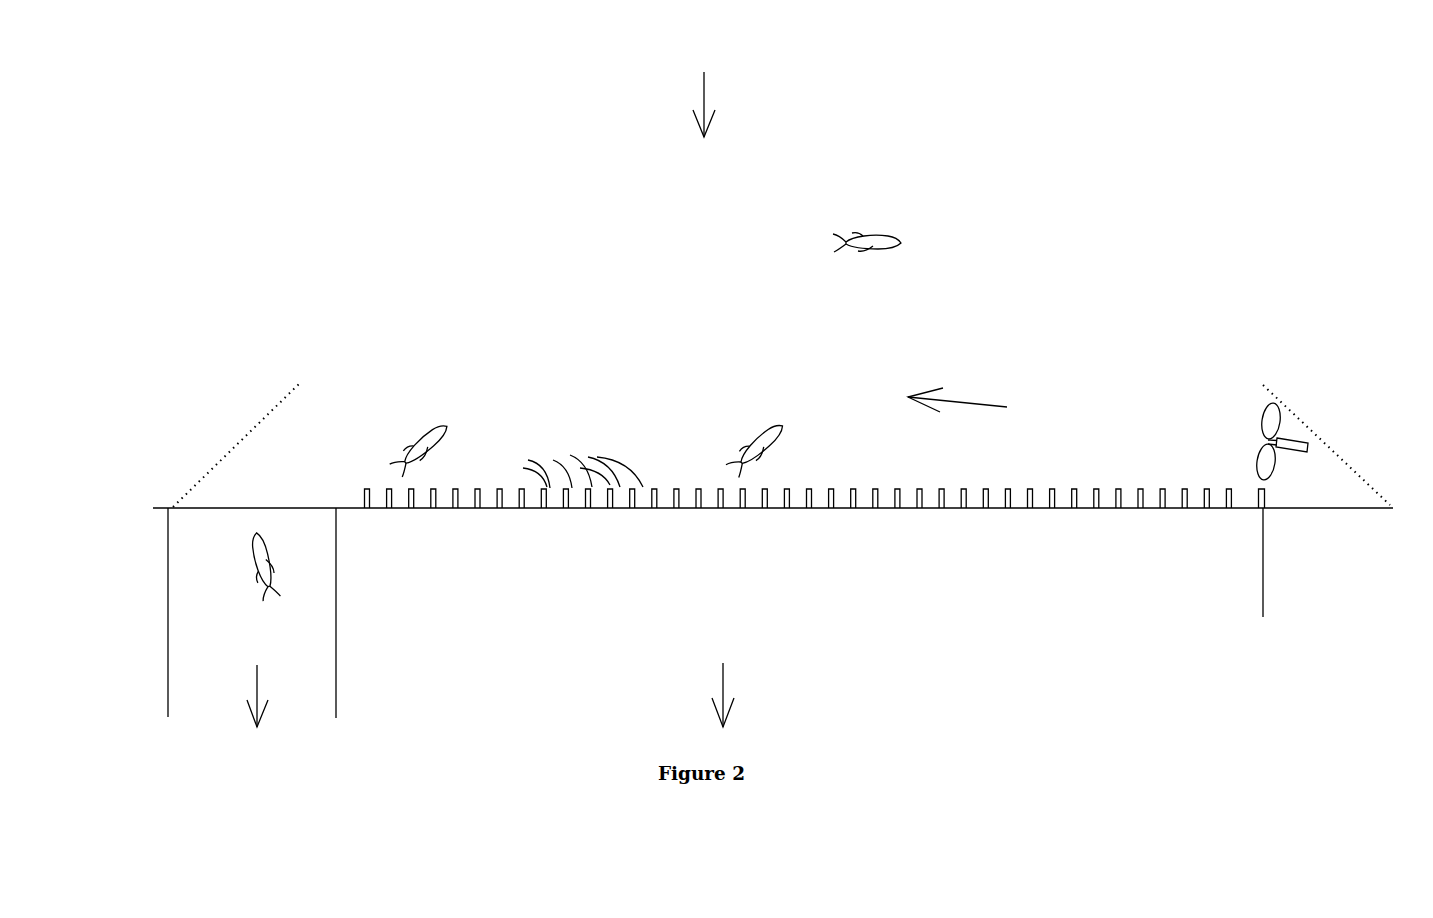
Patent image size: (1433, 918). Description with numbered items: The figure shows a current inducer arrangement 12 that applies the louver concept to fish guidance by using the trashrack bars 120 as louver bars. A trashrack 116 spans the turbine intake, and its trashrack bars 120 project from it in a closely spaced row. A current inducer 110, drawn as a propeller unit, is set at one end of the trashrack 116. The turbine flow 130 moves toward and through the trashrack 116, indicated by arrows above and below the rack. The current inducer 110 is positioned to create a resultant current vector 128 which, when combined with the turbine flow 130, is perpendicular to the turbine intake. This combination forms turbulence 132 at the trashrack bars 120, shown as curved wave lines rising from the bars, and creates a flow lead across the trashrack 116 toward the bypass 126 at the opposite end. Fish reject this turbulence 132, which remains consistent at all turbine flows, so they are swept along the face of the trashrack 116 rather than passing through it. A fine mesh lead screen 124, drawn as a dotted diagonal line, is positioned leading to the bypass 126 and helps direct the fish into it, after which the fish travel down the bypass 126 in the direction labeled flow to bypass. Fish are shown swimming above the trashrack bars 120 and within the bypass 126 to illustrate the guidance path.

The fish guidance system 12 is at (1345, 458).
The current inducer 110 is at (1257, 417).
The trashrack 116 is at (995, 517).
The trashrack bars 120 is at (967, 484).
The fine mesh lead screen 124 is at (262, 415).
The bypass 126 is at (276, 628).
The resultant current vector 128 is at (969, 398).
The turbine flow 130 is at (710, 88).
The turbulence 132 is at (560, 458).